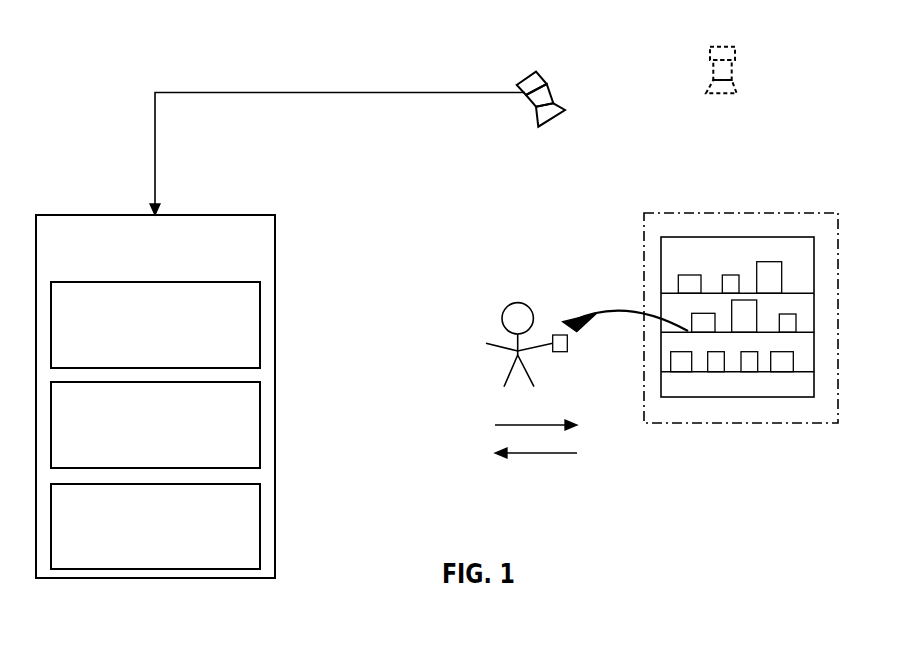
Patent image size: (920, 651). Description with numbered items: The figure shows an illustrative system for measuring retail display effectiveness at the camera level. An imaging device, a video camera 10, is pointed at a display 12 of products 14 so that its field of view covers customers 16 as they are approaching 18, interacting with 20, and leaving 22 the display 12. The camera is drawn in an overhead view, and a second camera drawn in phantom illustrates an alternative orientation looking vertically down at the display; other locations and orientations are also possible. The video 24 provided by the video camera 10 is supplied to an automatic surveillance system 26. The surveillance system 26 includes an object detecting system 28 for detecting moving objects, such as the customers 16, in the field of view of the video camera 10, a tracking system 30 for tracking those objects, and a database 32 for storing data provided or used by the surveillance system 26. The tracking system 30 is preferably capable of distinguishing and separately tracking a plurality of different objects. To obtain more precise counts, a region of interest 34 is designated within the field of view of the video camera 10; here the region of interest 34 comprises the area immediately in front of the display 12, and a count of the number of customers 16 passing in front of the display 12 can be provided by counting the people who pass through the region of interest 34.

The video camera 10 is at (522, 85).
The display 12 is at (778, 237).
The products 14 is at (782, 274).
The customers 16 is at (458, 331).
The approaching 18 is at (495, 425).
The interacting with 20 is at (598, 315).
The leaving 22 is at (513, 452).
The video 24 is at (337, 154).
The automatic surveillance system 26 is at (155, 396).
The object detecting system 28 is at (155, 325).
The tracking system 30 is at (155, 425).
The database 32 is at (155, 526).
The region of interest 34 is at (838, 390).